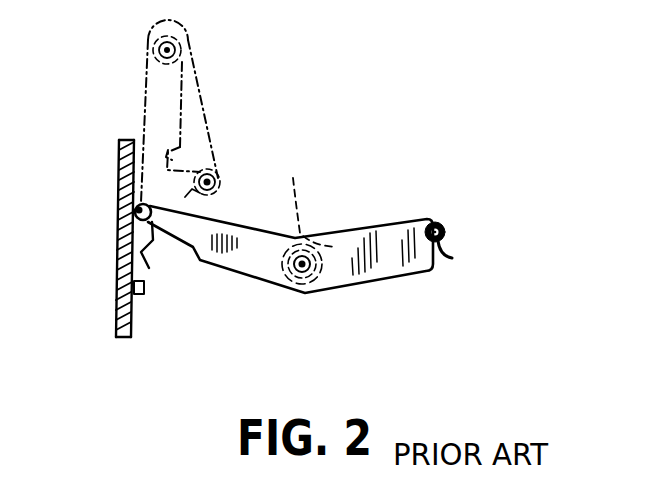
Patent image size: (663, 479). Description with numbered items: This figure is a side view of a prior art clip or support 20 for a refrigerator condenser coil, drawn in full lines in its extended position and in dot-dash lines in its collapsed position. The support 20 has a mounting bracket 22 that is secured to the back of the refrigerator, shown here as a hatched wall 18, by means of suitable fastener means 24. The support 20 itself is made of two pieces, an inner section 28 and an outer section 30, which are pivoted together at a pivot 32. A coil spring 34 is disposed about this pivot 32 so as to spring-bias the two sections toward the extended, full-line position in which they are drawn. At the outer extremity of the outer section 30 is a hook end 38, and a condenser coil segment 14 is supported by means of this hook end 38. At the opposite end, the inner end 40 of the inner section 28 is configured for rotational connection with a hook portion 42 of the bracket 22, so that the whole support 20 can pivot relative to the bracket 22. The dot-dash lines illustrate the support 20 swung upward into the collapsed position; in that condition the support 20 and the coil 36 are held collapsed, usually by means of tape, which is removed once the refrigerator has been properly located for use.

The condenser coil segment 14 is at (450, 228).
The wall 18 is at (114, 317).
The clip or support 20 is at (290, 270).
The mounting bracket 22 is at (137, 307).
The fastener means 24 is at (146, 288).
The inner section 28 is at (236, 270).
The outer section 30 is at (327, 238).
The pivot 32 is at (322, 291).
The coil spring 34 is at (311, 199).
The coil 36 is at (213, 177).
The hook end 38 is at (456, 257).
The inner end 40 is at (135, 208).
The hook portion 42 is at (167, 207).